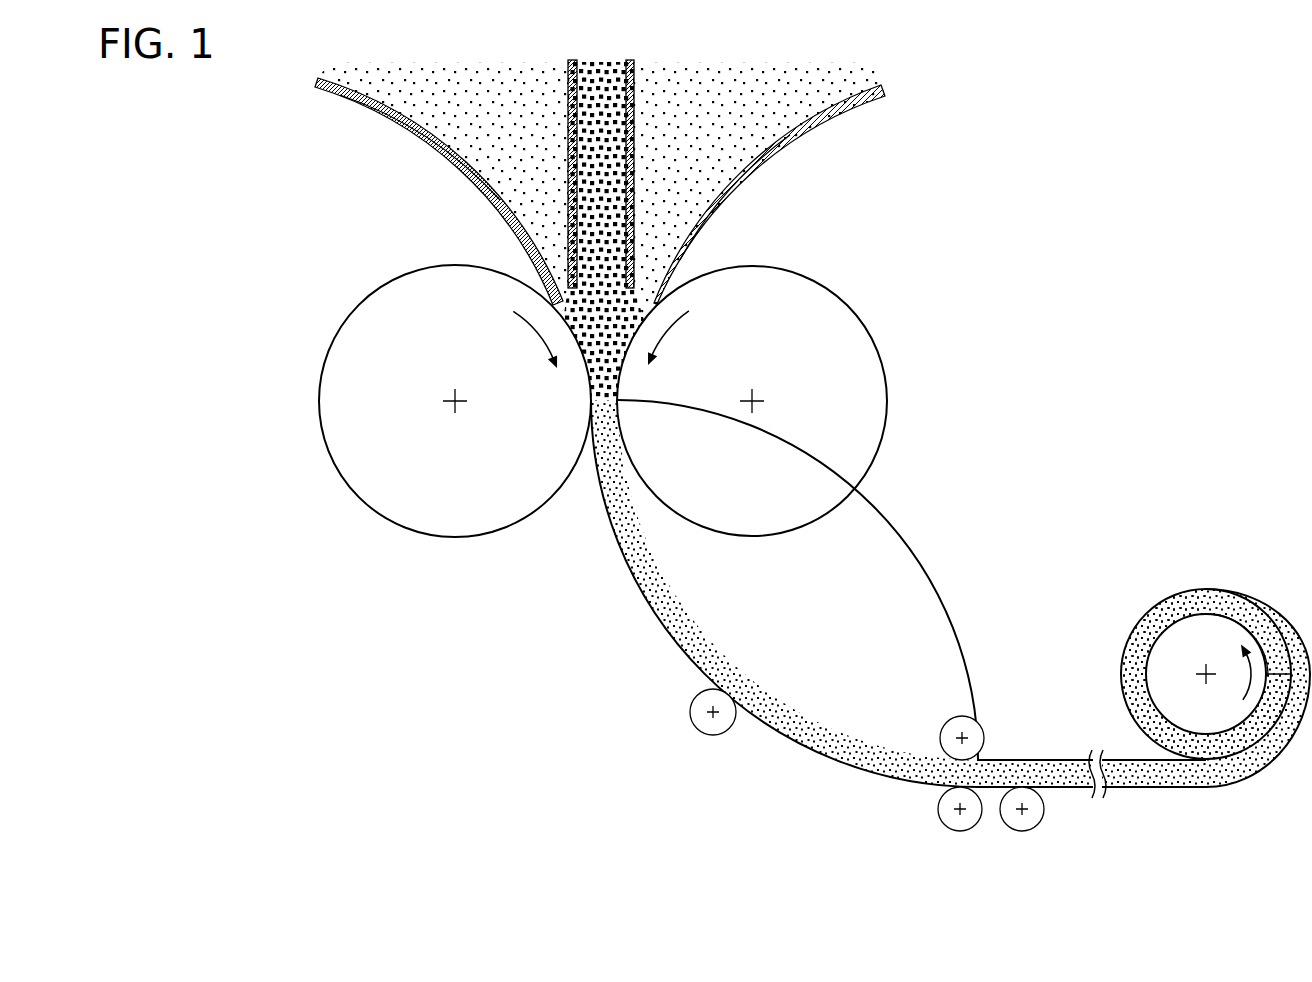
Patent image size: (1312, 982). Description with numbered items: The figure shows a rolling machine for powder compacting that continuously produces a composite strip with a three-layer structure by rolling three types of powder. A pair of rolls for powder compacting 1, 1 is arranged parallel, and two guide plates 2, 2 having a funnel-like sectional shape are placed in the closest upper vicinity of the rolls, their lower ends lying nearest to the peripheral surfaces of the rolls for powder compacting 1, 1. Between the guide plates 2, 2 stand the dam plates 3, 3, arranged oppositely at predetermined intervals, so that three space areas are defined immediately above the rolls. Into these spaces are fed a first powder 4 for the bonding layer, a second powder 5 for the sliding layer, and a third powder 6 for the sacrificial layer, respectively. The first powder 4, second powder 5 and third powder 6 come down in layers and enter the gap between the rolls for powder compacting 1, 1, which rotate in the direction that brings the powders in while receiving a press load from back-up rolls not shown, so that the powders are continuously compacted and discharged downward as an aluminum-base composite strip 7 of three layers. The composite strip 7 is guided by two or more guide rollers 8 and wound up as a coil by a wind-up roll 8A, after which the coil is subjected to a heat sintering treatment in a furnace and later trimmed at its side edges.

The roll for powder compacting 1 is at (320, 402).
The guide plate 2 is at (370, 123).
The dam plate 3 is at (568, 62).
The first powder 4 is at (466, 140).
The second powder 5 is at (603, 62).
The third powder 6 is at (702, 164).
The aluminum-base composite strip 7 is at (800, 714).
The guide roller 8 is at (703, 736).
The wind-up roll 8A is at (1175, 640).